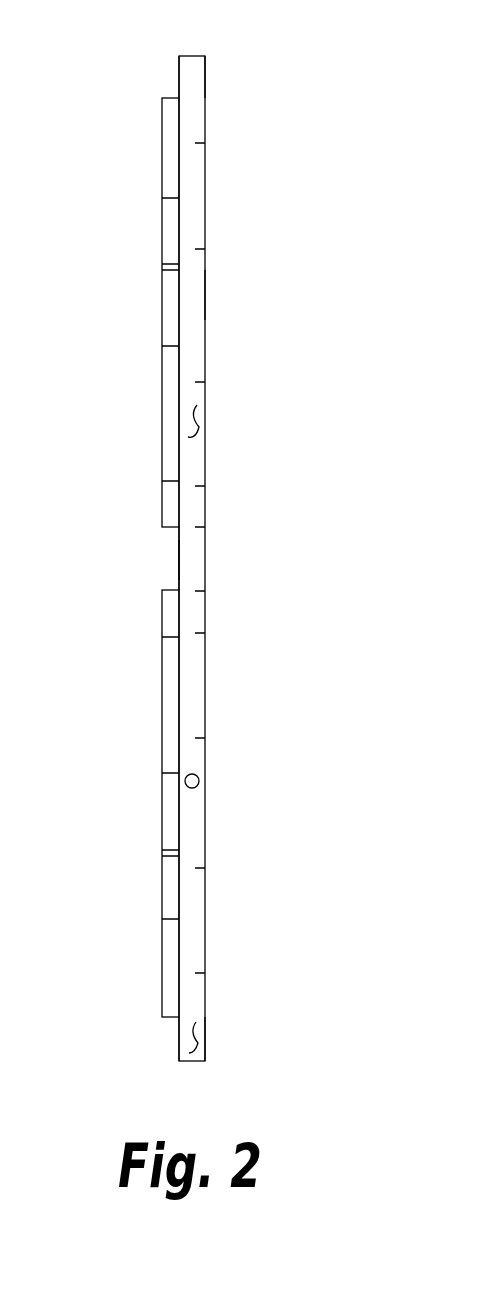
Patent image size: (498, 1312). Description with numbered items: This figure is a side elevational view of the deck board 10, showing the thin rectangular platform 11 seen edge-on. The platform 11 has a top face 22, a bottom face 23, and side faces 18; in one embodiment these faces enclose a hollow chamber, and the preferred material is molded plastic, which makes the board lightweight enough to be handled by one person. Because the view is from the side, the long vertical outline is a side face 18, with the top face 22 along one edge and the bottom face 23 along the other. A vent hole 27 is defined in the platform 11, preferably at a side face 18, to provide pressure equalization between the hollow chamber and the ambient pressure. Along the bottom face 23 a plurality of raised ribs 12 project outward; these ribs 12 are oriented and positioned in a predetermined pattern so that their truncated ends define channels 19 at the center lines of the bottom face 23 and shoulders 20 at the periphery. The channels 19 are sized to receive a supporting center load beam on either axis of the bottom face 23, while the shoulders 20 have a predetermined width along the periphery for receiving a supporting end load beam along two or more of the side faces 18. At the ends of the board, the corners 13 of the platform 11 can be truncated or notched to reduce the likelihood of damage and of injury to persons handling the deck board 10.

The deck board 10 is at (189, 561).
The rectangular platform 11 is at (206, 212).
The raised ribs 12 is at (162, 190).
The corner 13 is at (203, 1046).
The side face 18 is at (203, 432).
The channel 19 is at (178, 560).
The shoulder 20 is at (178, 77).
The top face 22 is at (205, 292).
The bottom face 23 is at (178, 562).
The vent hole 27 is at (199, 780).